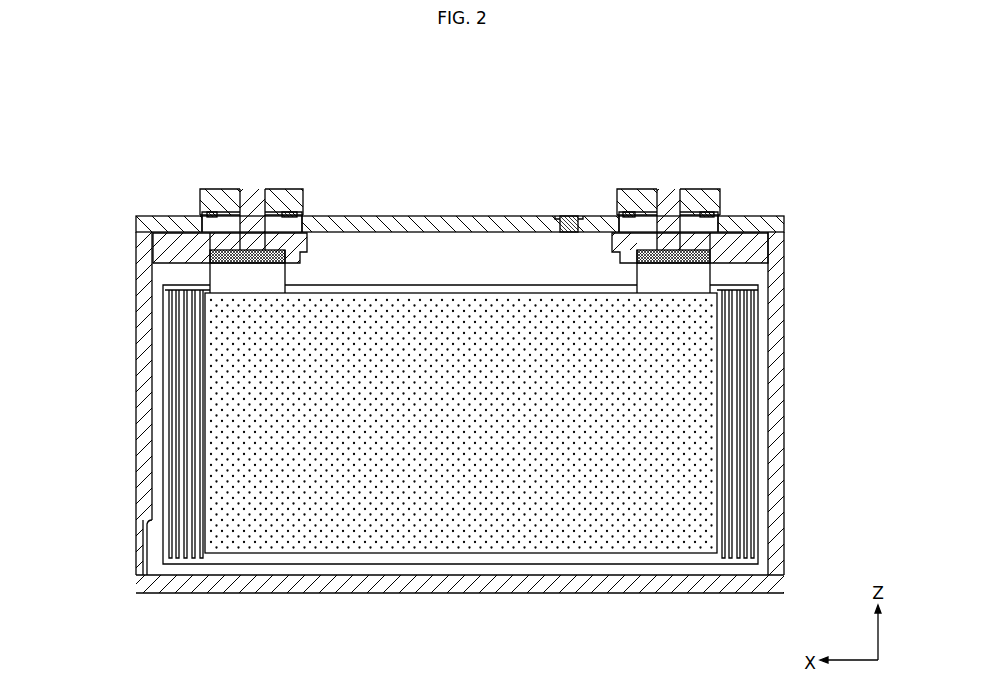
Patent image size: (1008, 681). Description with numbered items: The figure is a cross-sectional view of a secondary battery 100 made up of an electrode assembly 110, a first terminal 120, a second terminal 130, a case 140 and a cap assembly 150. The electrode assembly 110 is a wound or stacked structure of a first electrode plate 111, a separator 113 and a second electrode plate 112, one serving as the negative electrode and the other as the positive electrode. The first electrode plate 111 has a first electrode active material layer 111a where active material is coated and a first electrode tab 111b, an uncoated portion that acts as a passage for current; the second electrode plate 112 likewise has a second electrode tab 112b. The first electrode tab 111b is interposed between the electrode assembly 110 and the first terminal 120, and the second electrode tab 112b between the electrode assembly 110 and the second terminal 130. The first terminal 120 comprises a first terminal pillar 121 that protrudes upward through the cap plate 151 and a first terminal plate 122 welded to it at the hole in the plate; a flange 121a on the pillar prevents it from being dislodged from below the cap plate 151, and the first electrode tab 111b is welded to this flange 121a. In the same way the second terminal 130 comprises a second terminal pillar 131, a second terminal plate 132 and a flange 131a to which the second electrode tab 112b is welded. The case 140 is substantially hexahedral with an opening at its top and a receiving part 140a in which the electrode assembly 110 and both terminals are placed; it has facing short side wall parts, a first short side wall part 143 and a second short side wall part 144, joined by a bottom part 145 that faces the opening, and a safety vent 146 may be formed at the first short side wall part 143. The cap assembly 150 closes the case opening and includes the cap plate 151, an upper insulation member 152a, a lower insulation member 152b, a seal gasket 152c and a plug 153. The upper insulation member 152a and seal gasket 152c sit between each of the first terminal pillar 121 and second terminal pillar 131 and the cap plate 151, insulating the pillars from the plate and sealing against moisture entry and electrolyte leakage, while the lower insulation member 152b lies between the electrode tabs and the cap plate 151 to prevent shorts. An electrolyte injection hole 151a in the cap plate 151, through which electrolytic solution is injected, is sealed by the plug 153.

The secondary battery 100 is at (63, 104).
The electrode assembly 110 is at (461, 472).
The first electrode plate 111 is at (200, 333).
The first electrode active material layer 111a is at (365, 530).
The first electrode tab 111b is at (222, 276).
The second electrode plate 112 is at (735, 336).
The second electrode tab 112b is at (712, 275).
The separator 113 is at (428, 558).
The first terminal 120 is at (220, 187).
The first terminal pillar 121 is at (250, 189).
The flange 121a is at (305, 248).
The first terminal plate 122 is at (292, 189).
The second terminal 130 is at (671, 188).
The second terminal pillar 131 is at (668, 189).
The flange 131a is at (623, 240).
The second terminal plate 132 is at (708, 189).
The case 140 is at (461, 441).
The receiving part 140a is at (469, 259).
The first short side wall part 143 is at (148, 400).
The second short side wall part 144 is at (775, 460).
The bottom part 145 is at (626, 580).
The safety vent 146 is at (137, 543).
The cap assembly 150 is at (460, 183).
The cap plate 151 is at (535, 216).
The electrolyte injection hole 151a is at (560, 233).
The upper insulation member 152a is at (290, 212).
The lower insulation member 152b is at (160, 240).
The seal gasket 152c is at (303, 218).
The plug 153 is at (569, 216).